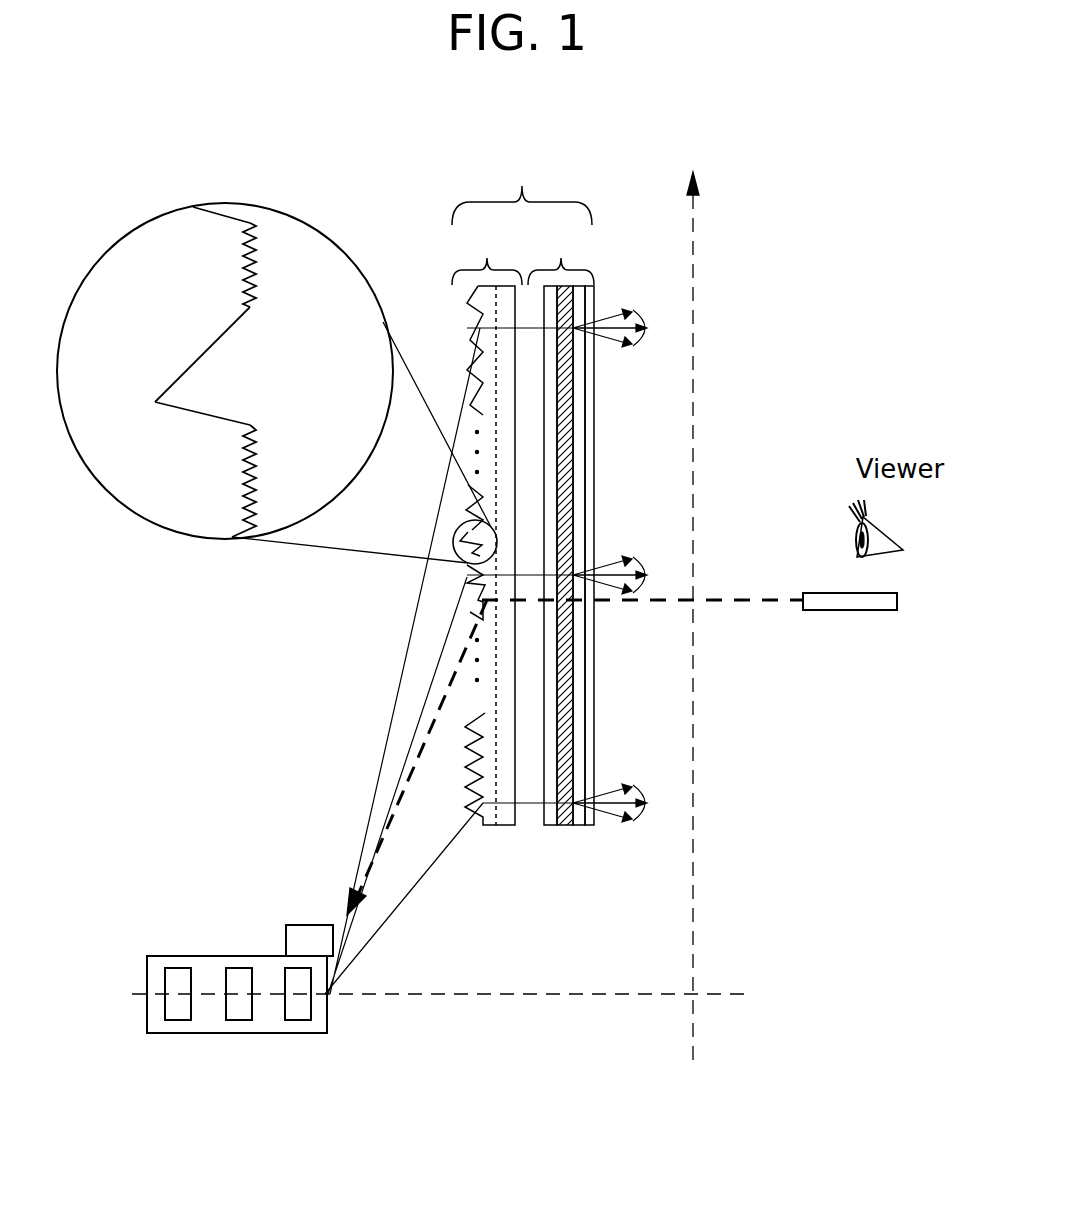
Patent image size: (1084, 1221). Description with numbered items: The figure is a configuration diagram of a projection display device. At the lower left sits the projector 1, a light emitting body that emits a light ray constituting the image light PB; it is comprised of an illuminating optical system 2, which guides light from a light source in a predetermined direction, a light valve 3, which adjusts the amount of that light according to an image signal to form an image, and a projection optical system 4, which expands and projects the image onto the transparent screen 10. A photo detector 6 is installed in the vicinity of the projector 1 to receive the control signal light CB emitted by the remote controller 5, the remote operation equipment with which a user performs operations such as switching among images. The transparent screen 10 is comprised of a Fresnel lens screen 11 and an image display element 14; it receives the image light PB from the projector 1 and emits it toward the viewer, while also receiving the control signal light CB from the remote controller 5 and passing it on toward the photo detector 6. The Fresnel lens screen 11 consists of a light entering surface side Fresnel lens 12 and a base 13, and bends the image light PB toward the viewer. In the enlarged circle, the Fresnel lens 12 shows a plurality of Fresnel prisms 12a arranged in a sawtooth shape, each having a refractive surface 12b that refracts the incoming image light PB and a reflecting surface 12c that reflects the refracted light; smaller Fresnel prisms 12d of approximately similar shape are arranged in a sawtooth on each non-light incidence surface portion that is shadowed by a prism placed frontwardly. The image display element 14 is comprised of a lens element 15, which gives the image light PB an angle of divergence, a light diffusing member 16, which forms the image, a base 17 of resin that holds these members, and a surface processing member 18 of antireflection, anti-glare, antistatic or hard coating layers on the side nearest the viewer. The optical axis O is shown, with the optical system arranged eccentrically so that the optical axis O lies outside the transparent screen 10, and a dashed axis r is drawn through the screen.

The projector 1 is at (170, 956).
The illuminating optical system 2 is at (177, 1020).
The light valve 3 is at (238, 1020).
The projection optical system 4 is at (297, 1020).
The remote controller 5 is at (868, 612).
The photo detector 6 is at (303, 925).
The transparent screen 10 is at (522, 181).
The Fresnel lens screen 11 is at (487, 253).
The light entering surface side Fresnel lens 12 is at (483, 822).
The Fresnel prism 12a is at (215, 385).
The refractive surface 12b is at (190, 410).
The reflecting surface 12c is at (200, 355).
The Fresnel prism 12d is at (243, 488).
The base 13 is at (497, 822).
The image display element 14 is at (561, 253).
The lens element 15 is at (546, 822).
The light diffusing member 16 is at (563, 825).
The base 17 is at (575, 712).
The surface processing member 18 is at (595, 647).
The image light PB is at (370, 803).
The control signal light CB is at (740, 604).
The optical axis O is at (456, 994).
The axis r is at (692, 602).